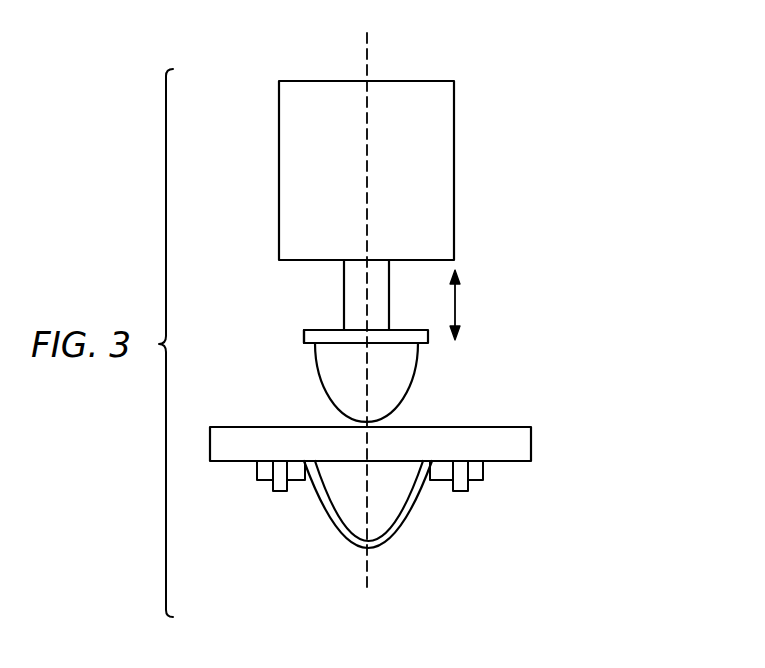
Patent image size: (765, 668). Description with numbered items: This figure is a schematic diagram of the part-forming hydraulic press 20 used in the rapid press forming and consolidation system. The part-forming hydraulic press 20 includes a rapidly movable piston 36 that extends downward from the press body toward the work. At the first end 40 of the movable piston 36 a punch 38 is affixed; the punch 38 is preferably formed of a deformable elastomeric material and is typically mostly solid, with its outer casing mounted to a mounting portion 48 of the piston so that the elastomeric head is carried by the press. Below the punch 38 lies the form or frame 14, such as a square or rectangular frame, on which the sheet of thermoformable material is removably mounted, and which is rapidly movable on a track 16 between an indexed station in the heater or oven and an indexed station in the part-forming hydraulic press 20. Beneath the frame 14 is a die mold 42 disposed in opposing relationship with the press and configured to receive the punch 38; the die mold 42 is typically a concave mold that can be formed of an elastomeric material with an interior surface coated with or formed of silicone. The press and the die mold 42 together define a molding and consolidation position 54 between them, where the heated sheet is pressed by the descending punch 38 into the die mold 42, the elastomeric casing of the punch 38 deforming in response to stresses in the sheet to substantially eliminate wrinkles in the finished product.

The part-forming hydraulic press 20 is at (478, 107).
The movable piston 36 is at (344, 271).
The first end 40 is at (344, 330).
The mounting portion 48 is at (304, 337).
The punch 38 is at (418, 356).
The molding and consolidation position 54 is at (500, 408).
The form or frame 14 is at (531, 445).
The track 16 is at (281, 491).
The die mold 42 is at (413, 522).